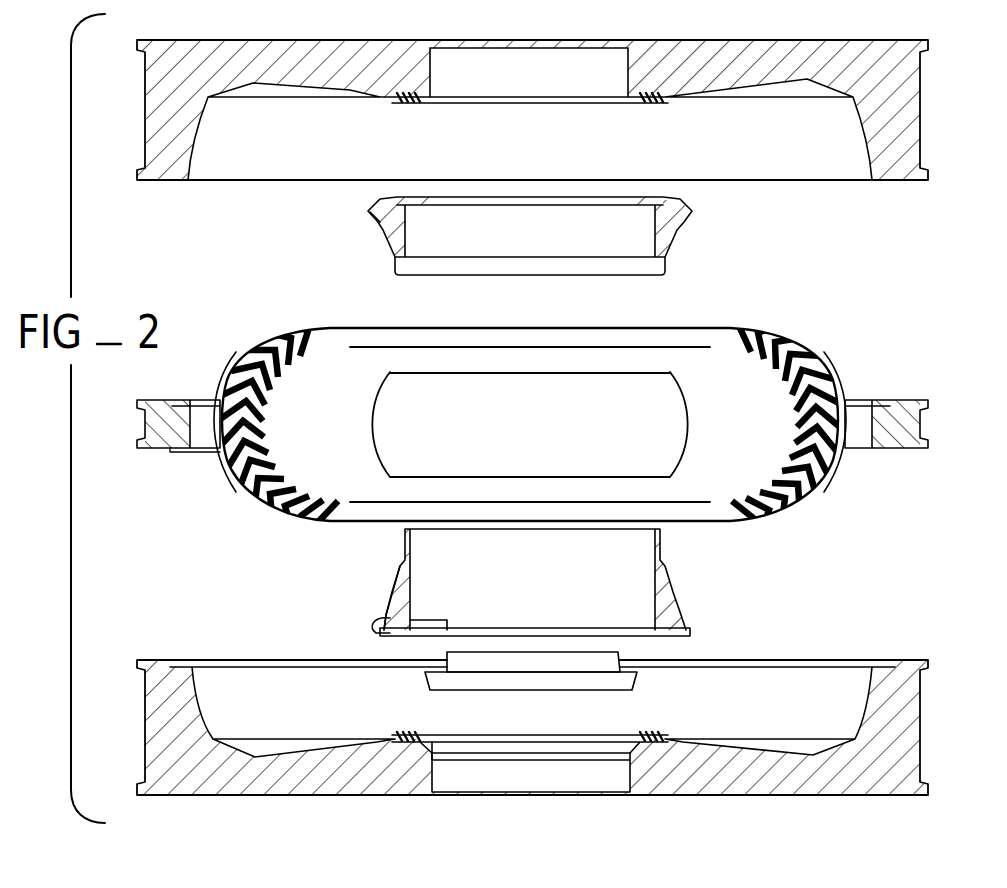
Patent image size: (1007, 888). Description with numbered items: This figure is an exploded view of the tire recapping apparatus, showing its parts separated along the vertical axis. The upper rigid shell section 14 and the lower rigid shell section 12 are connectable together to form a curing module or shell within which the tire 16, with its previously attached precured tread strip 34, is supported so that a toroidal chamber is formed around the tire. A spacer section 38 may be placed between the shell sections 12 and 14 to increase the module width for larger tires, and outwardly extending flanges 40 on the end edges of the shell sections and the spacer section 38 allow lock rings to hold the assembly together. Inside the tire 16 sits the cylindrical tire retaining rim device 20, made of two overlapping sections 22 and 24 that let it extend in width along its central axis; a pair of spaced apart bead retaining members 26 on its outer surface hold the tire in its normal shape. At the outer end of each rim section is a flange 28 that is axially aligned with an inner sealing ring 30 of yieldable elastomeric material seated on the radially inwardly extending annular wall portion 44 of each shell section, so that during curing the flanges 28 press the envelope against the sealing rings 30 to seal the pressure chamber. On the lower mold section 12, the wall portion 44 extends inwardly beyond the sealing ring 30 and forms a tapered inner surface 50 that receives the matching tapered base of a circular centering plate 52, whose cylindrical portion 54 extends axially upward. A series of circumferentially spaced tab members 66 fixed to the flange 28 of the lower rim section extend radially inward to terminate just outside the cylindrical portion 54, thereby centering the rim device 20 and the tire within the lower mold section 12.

The lower rigid shell section 12 is at (510, 748).
The upper rigid shell section 14 is at (146, 112).
The tire 16 is at (540, 415).
The cylindrical tire retaining rim device 20 is at (535, 582).
The overlapping rim section 22 is at (404, 600).
The overlapping rim section 24 is at (402, 243).
The bead retaining member 26 is at (382, 231).
The flange 28 is at (372, 199).
The inner sealing ring 30 is at (405, 104).
The precured tread strip 34 is at (228, 368).
The spacer section 38 is at (160, 443).
The outwardly extending flange 40 is at (137, 45).
The radially inwardly extending annular wall portion 44 is at (392, 776).
The tapered inner surface 50 is at (433, 753).
The circular centering plate 52 is at (634, 659).
The cylindrical portion 54 is at (521, 662).
The tab member 66 is at (448, 624).